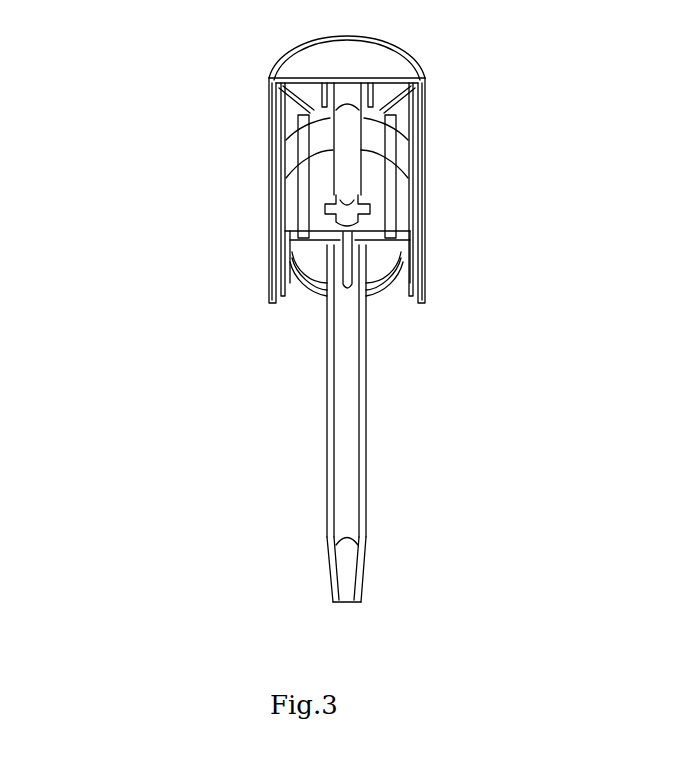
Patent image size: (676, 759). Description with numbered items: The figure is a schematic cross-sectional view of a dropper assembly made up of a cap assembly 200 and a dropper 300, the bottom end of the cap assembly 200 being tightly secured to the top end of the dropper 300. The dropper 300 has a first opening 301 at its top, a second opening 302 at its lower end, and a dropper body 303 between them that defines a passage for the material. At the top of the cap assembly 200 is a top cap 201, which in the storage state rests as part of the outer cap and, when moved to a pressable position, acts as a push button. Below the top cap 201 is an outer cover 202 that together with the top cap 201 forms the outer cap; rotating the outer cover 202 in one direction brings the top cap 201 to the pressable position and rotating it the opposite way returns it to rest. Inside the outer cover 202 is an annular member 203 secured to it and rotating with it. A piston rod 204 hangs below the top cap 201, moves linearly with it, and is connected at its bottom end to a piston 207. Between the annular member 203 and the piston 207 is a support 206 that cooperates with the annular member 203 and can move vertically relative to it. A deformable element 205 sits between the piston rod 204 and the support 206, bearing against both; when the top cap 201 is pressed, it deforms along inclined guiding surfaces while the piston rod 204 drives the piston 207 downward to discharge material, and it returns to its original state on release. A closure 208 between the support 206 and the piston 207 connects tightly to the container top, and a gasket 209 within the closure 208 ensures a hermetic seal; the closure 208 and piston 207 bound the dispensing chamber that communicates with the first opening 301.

The cap assembly 200 is at (148, 108).
The top cap 201 is at (268, 89).
The outer cover 202 is at (268, 228).
The annular member 203 is at (272, 173).
The piston rod 204 is at (421, 112).
The deformable element 205 is at (412, 150).
The support 206 is at (410, 188).
The piston 207 is at (382, 218).
The closure 208 is at (284, 278).
The gasket 209 is at (408, 241).
The dropper 300 is at (368, 408).
The first opening 301 is at (338, 291).
The second opening 302 is at (344, 596).
The dropper body 303 is at (347, 458).